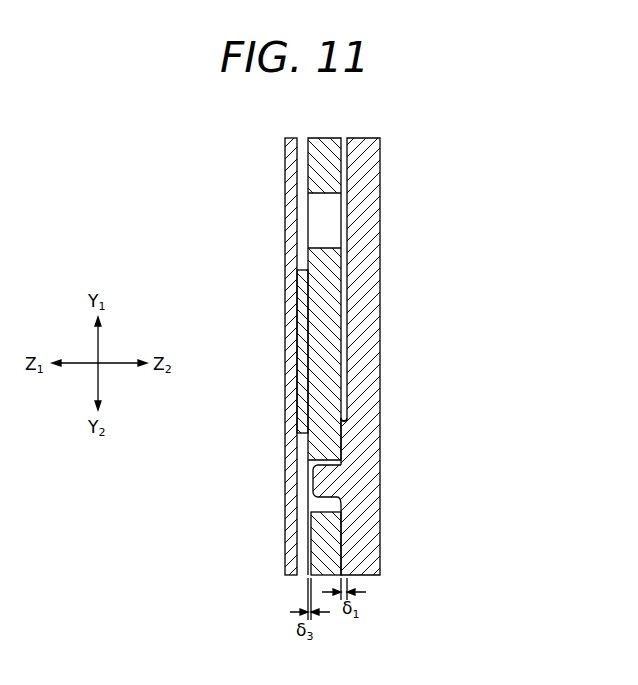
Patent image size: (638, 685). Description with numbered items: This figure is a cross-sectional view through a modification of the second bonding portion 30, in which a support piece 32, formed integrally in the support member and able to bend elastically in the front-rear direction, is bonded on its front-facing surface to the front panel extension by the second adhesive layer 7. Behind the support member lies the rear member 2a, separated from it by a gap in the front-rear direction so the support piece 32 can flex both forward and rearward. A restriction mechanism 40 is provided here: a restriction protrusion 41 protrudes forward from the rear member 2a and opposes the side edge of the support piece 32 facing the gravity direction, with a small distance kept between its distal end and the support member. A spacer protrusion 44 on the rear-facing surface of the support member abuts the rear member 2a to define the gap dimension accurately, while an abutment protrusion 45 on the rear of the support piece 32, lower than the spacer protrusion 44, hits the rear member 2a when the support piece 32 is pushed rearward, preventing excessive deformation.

The rear member 2a is at (373, 235).
The second adhesive layer 7 is at (300, 337).
The second bonding portion 30 is at (508, 272).
The support piece 32 is at (310, 306).
The restriction mechanism 40 is at (292, 492).
The restriction protrusion 41 is at (328, 483).
The spacer protrusion 44 is at (343, 549).
The abutment protrusion 45 is at (347, 423).